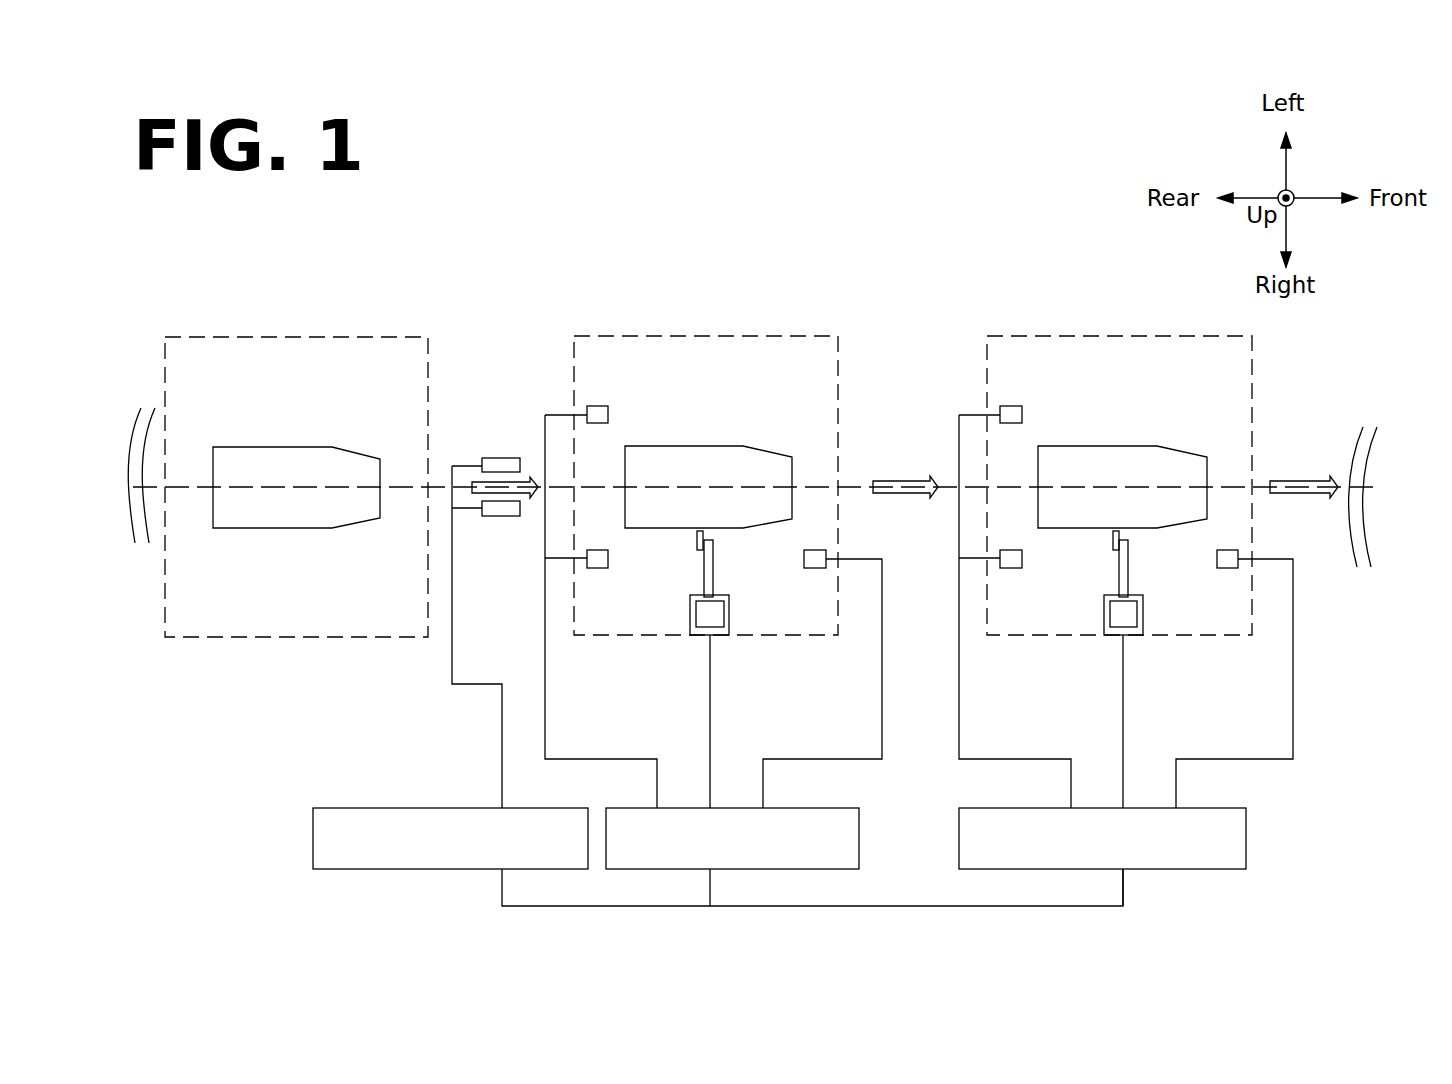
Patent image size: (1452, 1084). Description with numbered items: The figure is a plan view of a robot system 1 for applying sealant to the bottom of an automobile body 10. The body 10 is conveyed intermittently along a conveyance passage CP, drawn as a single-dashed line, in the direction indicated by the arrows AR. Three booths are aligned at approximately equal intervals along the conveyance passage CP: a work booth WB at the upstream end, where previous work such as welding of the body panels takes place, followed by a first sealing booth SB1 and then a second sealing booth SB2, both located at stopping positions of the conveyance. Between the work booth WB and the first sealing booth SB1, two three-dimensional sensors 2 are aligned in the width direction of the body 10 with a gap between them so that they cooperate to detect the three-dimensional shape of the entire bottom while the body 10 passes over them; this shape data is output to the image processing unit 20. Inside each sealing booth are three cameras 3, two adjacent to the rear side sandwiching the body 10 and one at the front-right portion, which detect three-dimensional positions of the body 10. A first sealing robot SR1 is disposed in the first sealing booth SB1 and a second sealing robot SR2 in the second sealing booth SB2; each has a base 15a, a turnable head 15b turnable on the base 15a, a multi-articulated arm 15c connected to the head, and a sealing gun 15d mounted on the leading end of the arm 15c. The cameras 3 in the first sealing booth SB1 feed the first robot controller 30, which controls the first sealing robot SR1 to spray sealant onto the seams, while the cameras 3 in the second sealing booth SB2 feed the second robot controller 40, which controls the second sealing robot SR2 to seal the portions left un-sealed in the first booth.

The robot system 1 is at (887, 250).
The three-dimensional sensor 2 is at (503, 458).
The camera 3 is at (596, 406).
The automobile body 10 is at (300, 447).
The base 15a is at (729, 615).
The turnable head 15b is at (696, 615).
The arm 15c is at (713, 572).
The sealing gun 15d is at (697, 540).
The image processing unit 20 is at (313, 840).
The first robot controller 30 is at (859, 838).
The second robot controller 40 is at (1246, 838).
The work booth WB is at (232, 337).
The first sealing booth SB1 is at (629, 336).
The second sealing booth SB2 is at (1040, 336).
The first sealing robot SR1 is at (688, 585).
The second sealing robot SR2 is at (1102, 585).
The arrow AR is at (903, 480).
The conveyance passage CP is at (1217, 483).